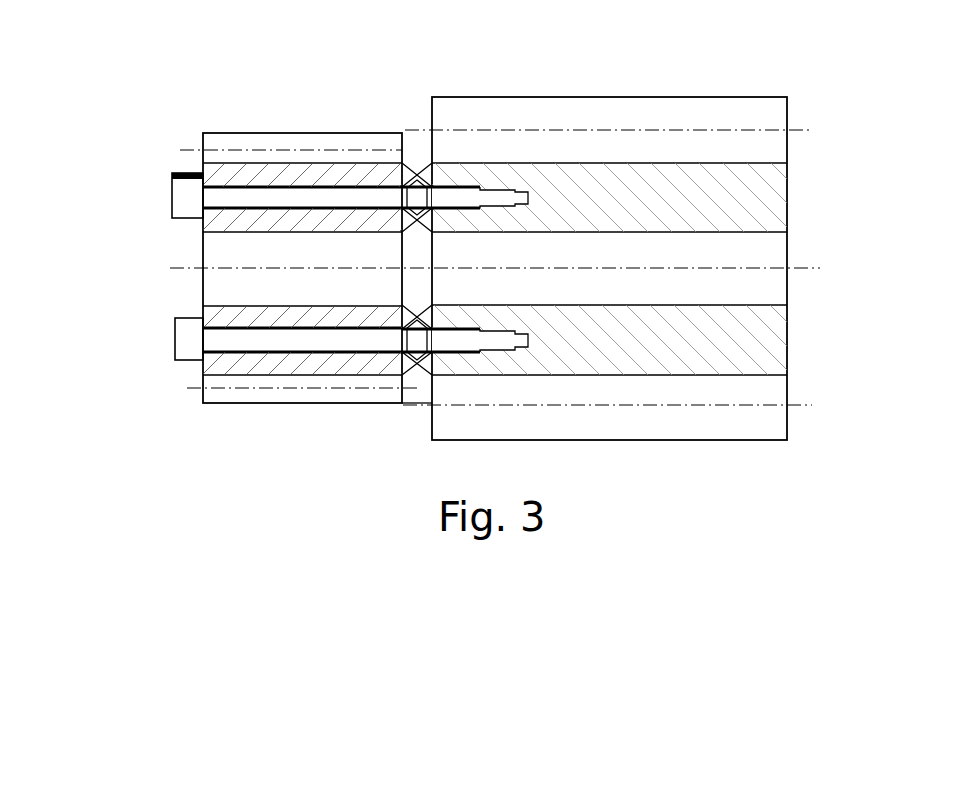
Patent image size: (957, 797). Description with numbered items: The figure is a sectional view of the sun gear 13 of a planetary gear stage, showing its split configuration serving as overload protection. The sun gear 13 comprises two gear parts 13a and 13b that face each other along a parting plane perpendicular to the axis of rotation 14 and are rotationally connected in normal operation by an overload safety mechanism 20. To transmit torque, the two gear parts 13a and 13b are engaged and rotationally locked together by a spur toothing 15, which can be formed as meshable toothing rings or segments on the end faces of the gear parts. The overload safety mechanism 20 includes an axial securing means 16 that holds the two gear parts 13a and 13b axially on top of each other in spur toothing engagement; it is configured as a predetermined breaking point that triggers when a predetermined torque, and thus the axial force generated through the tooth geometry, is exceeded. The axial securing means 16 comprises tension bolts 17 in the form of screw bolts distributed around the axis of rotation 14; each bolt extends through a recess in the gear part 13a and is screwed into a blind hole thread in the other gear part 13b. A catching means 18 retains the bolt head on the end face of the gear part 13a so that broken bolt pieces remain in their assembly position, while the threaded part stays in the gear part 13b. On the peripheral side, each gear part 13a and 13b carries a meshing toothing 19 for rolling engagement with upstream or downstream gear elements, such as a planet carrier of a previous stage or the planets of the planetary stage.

The sun gear 13 is at (643, 79).
The gear part 13a is at (278, 176).
The gear part 13b is at (778, 187).
The axis of rotation 14 is at (237, 268).
The spur toothing 15 is at (417, 172).
The axial securing means 16 is at (178, 368).
The tension bolt 17 is at (212, 172).
The catching means 18 is at (171, 176).
The meshing toothing 19 is at (734, 120).
The overload safety mechanism 20 is at (415, 408).